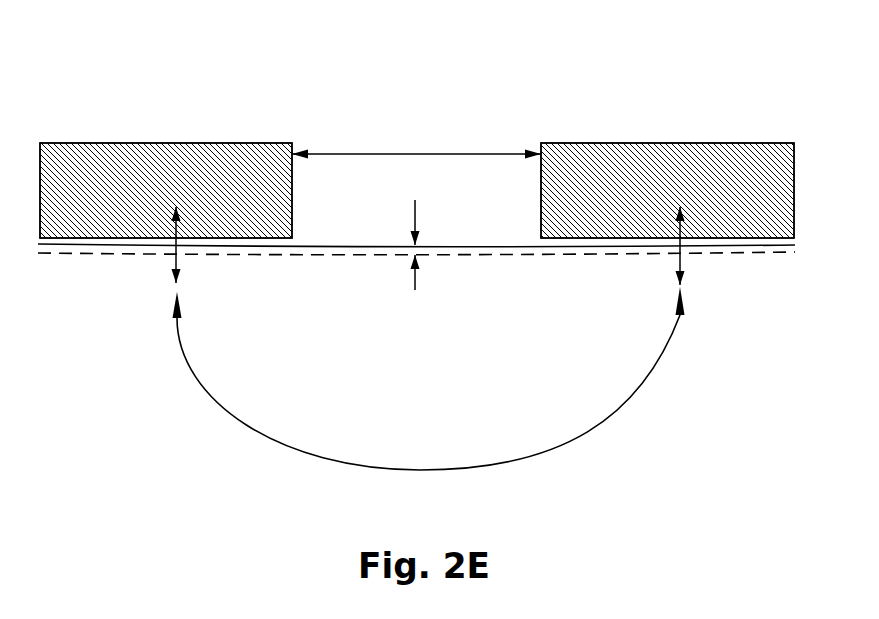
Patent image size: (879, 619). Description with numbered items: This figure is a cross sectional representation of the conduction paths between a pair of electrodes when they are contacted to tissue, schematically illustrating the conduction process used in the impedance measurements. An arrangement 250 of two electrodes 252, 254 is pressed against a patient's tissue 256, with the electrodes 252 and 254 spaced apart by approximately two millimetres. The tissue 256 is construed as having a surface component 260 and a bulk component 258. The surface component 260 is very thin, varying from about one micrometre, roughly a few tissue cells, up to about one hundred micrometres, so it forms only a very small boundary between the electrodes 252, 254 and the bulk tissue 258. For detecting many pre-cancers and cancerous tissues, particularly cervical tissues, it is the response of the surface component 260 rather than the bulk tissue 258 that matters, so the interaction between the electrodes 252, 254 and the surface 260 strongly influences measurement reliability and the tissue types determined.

The arrangement of electrodes 250 is at (624, 82).
The electrode 252 is at (185, 143).
The electrode 254 is at (705, 143).
The tissue 256 is at (648, 514).
The bulk component 258 is at (712, 460).
The surface component 260 is at (797, 246).